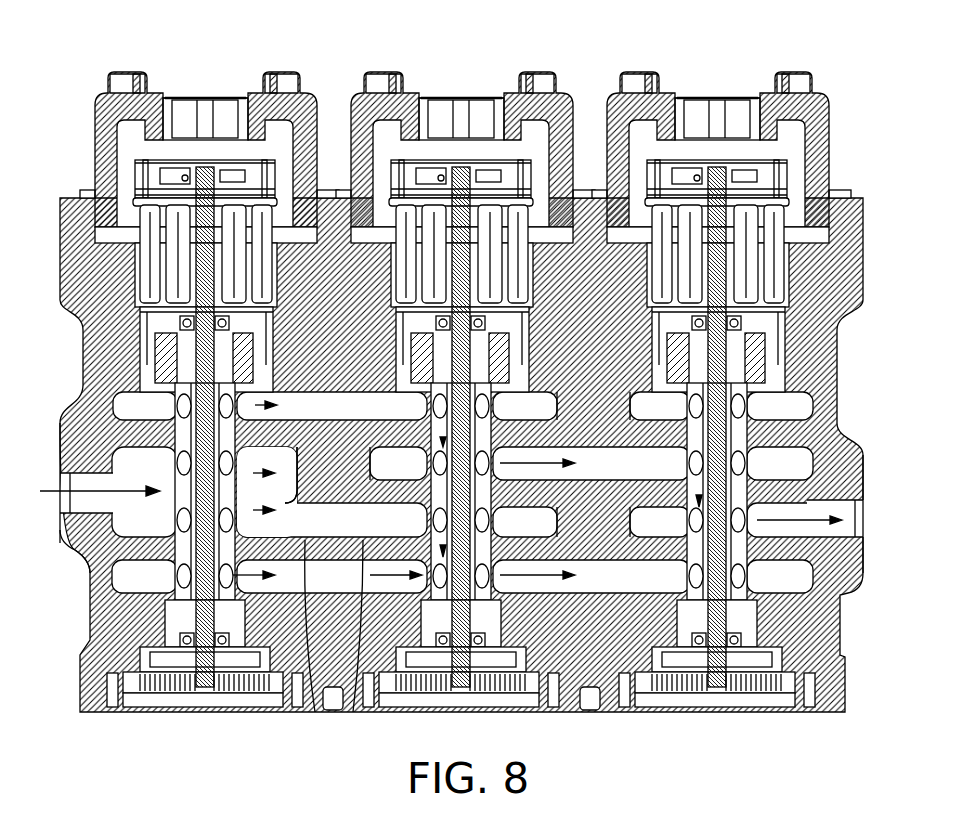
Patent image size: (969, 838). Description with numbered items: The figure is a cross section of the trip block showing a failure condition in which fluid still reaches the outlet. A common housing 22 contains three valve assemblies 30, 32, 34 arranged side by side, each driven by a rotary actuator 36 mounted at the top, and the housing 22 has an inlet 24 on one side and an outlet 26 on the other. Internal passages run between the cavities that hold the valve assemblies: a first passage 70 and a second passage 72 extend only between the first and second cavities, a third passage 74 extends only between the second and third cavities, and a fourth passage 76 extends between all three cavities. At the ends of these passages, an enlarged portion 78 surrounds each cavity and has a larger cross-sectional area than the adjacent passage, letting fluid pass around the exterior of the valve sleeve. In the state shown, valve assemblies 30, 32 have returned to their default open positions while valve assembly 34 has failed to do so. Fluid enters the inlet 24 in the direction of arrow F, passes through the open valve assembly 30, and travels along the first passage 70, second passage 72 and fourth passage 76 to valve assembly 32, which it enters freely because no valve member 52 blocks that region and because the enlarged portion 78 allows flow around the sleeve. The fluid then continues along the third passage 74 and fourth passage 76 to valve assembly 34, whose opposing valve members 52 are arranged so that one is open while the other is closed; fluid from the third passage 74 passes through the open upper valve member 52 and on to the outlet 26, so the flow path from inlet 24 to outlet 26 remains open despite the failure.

The housing 22 is at (60, 215).
The inlet 24 is at (68, 423).
The outlet 26 is at (850, 447).
The valve assembly 30 is at (176, 62).
The valve assembly 32 is at (436, 56).
The valve assembly 34 is at (757, 62).
The rotary actuator 36 is at (230, 97).
The valve member 52 is at (497, 400).
The first passage 70 is at (315, 712).
The second passage 72 is at (320, 390).
The third passage 74 is at (590, 447).
The fourth passage 76 is at (353, 712).
The enlarged portion 78 is at (92, 555).
The directional arrow F is at (128, 492).